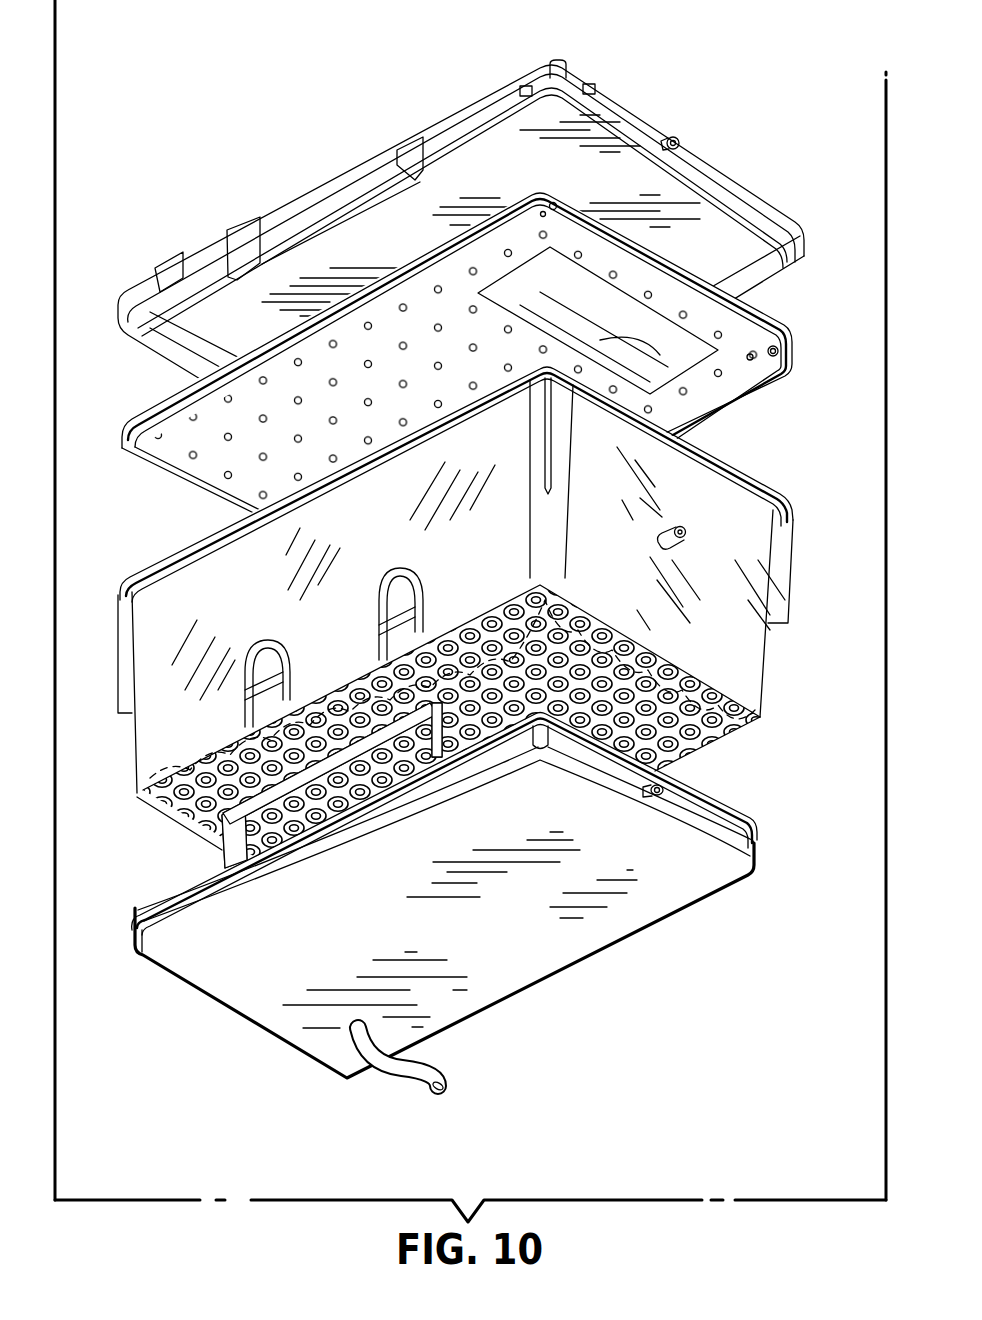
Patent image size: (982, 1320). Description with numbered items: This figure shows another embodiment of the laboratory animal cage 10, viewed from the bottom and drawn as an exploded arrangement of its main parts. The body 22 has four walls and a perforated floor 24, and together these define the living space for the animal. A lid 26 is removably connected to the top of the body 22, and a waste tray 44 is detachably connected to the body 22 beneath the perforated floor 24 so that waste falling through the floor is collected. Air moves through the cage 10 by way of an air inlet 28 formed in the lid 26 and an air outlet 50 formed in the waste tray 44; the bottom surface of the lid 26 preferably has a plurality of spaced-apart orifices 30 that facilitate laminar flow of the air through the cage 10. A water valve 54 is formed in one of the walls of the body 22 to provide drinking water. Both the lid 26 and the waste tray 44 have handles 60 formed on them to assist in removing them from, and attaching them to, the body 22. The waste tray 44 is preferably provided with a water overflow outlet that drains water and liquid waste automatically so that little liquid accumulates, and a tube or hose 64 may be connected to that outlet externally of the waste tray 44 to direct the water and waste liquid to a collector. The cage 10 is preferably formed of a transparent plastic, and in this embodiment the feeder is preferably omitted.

The cage 10 is at (110, 256).
The body 22 is at (183, 573).
The perforated floor 24 is at (727, 733).
The lid 26 is at (566, 76).
The air inlet 28 is at (680, 141).
The orifices 30 is at (752, 355).
The waste tray 44 is at (628, 922).
The air outlet 50 is at (663, 793).
The water valve 54 is at (684, 530).
The handles 60 is at (270, 250).
The tube or hose 64 is at (450, 1082).